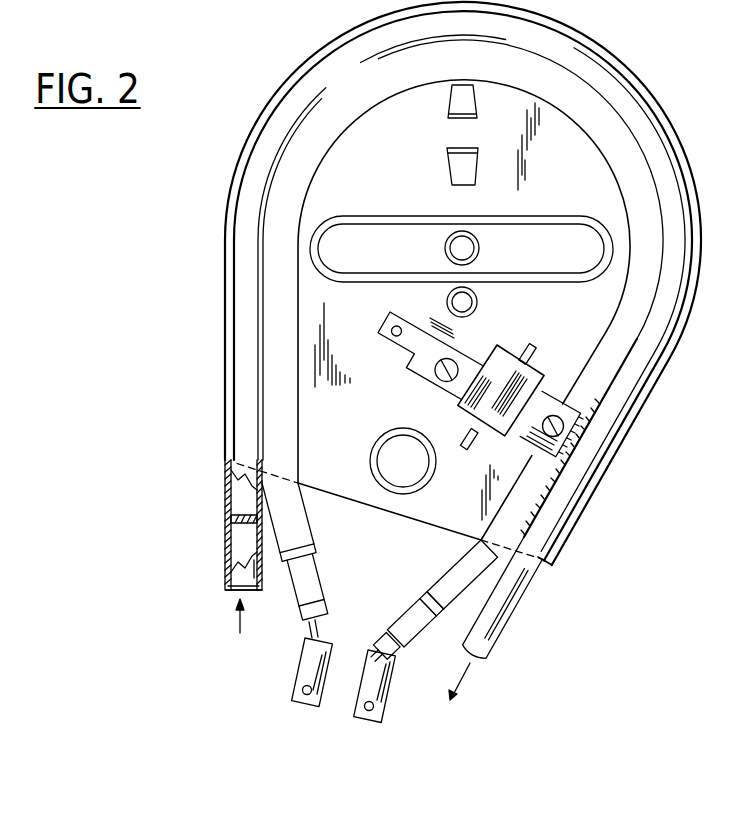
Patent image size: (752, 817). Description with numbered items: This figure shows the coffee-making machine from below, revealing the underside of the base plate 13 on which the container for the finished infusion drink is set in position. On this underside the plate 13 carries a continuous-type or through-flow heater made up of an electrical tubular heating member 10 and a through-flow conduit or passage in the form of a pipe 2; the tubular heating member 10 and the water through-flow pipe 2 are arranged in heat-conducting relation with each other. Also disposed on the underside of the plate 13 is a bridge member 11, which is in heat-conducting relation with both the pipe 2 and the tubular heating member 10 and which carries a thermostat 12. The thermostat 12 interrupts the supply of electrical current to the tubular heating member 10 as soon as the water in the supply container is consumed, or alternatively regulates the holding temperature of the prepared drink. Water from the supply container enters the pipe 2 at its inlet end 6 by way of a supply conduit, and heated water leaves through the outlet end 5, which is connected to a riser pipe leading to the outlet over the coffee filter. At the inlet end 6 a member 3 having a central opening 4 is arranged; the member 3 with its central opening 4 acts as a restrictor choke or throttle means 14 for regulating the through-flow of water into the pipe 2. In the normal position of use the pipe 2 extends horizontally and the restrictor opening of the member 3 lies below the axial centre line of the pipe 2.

The pipe 2 is at (588, 68).
The member 3 is at (232, 512).
The central opening 4 is at (243, 527).
The outlet end 5 is at (483, 660).
The inlet end 6 is at (225, 592).
The tubular heating member 10 is at (380, 86).
The bridge member 11 is at (421, 365).
The thermostat 12 is at (536, 376).
The base plate 13 is at (337, 468).
The throttle means 14 is at (219, 494).